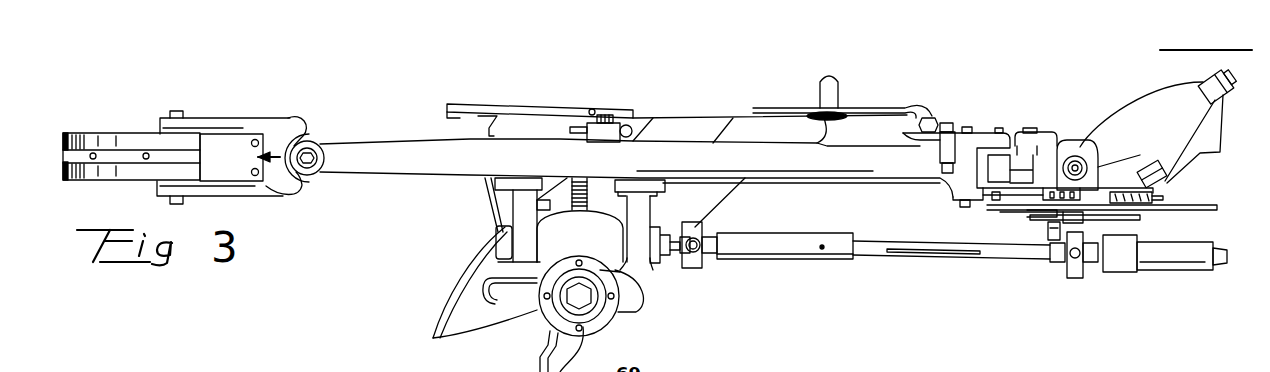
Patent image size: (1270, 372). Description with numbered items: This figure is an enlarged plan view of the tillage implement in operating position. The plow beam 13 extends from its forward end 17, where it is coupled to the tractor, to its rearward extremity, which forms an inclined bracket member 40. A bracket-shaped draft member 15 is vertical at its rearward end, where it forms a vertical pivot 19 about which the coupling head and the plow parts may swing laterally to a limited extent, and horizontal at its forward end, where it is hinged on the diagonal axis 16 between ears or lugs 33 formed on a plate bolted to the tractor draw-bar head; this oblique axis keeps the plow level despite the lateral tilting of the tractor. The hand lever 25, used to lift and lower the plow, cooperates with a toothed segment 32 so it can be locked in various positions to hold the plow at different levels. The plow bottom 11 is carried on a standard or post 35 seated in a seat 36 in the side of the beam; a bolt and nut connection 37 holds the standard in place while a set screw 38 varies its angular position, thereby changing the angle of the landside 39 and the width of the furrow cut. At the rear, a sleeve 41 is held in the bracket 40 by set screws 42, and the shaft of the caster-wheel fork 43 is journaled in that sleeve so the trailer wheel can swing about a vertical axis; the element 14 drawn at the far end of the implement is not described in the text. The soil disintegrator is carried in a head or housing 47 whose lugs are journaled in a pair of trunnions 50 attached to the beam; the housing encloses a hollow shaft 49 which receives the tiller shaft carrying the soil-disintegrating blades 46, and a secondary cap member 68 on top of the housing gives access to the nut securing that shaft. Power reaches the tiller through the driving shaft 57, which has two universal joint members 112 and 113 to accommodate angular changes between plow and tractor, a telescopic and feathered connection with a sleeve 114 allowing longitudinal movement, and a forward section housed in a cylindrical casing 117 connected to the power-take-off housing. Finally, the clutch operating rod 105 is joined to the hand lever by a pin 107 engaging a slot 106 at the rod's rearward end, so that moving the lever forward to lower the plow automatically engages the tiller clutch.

The plow bottom 11 is at (707, 207).
The plow beam 13 is at (410, 146).
The barrel 14 is at (96, 140).
The draft member 15 is at (1122, 118).
The diagonal axis 16 is at (1210, 74).
The forward end of the plow beam 17 is at (985, 137).
The vertical pivot 19 is at (1092, 156).
The hand lever 25 is at (1192, 212).
The toothed segment 32 is at (1062, 140).
The ears or lugs 33 is at (1170, 183).
The standard or post 35 is at (582, 118).
The seat 36 is at (594, 140).
The bolt and nut connection 37 is at (612, 115).
The set screw 38 is at (594, 108).
The landside 39 is at (688, 124).
The inclined bracket member 40 is at (292, 124).
The sleeve 41 is at (308, 177).
The set screws 42 is at (262, 185).
The trailer or caster-wheel fork 43 is at (264, 118).
The soil-disintegrating blades 46 is at (641, 303).
The head or housing 47 is at (596, 323).
The hollow shaft 49 is at (485, 266).
The trunnions or bracket members 50 is at (512, 206).
The driving shaft 57 is at (885, 256).
The supplemental or secondary cap member 68 is at (592, 300).
The clutch operating rod 105 is at (1128, 218).
The slot 106 is at (1000, 213).
The pin 107 is at (1048, 235).
The universal joint member 112 is at (702, 270).
The universal joint member 113 is at (1080, 280).
The sleeve 114 is at (756, 260).
The tubular or cylindrical casing 117 is at (1165, 272).